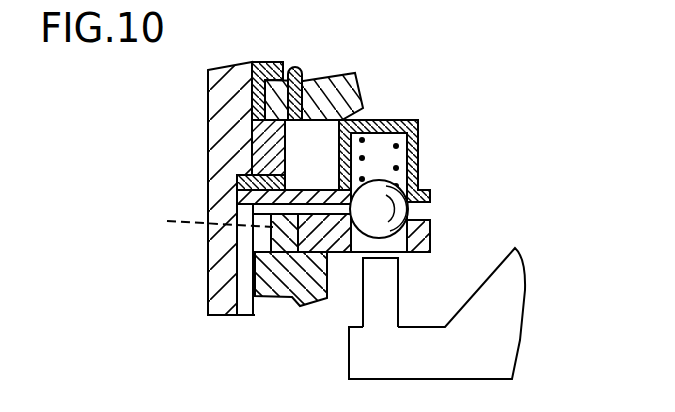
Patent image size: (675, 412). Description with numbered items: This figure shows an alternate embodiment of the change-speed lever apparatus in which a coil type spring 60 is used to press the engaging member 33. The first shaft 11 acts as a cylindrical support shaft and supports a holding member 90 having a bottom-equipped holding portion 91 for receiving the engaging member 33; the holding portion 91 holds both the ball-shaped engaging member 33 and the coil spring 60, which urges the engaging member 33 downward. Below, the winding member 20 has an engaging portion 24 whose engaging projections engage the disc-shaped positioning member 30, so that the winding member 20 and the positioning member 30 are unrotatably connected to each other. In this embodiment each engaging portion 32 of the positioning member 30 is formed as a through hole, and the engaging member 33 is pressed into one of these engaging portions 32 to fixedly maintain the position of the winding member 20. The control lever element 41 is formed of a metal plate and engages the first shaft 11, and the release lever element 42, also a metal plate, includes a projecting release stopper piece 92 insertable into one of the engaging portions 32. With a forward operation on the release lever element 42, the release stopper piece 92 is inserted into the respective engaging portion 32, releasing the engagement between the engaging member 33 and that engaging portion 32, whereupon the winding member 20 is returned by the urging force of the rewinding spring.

The first shaft 11 is at (208, 152).
The winding member 20 is at (277, 297).
The engaging portion 24 is at (202, 221).
The positioning member 30 is at (343, 252).
The engaging portion 32 is at (430, 240).
The engaging member 33 is at (395, 197).
The control lever element 41 is at (335, 80).
The release lever element 42 is at (515, 303).
The spring 60 is at (405, 168).
The holding member 90 is at (313, 190).
The holding portion 91 is at (392, 120).
The release stopper piece 92 is at (392, 278).